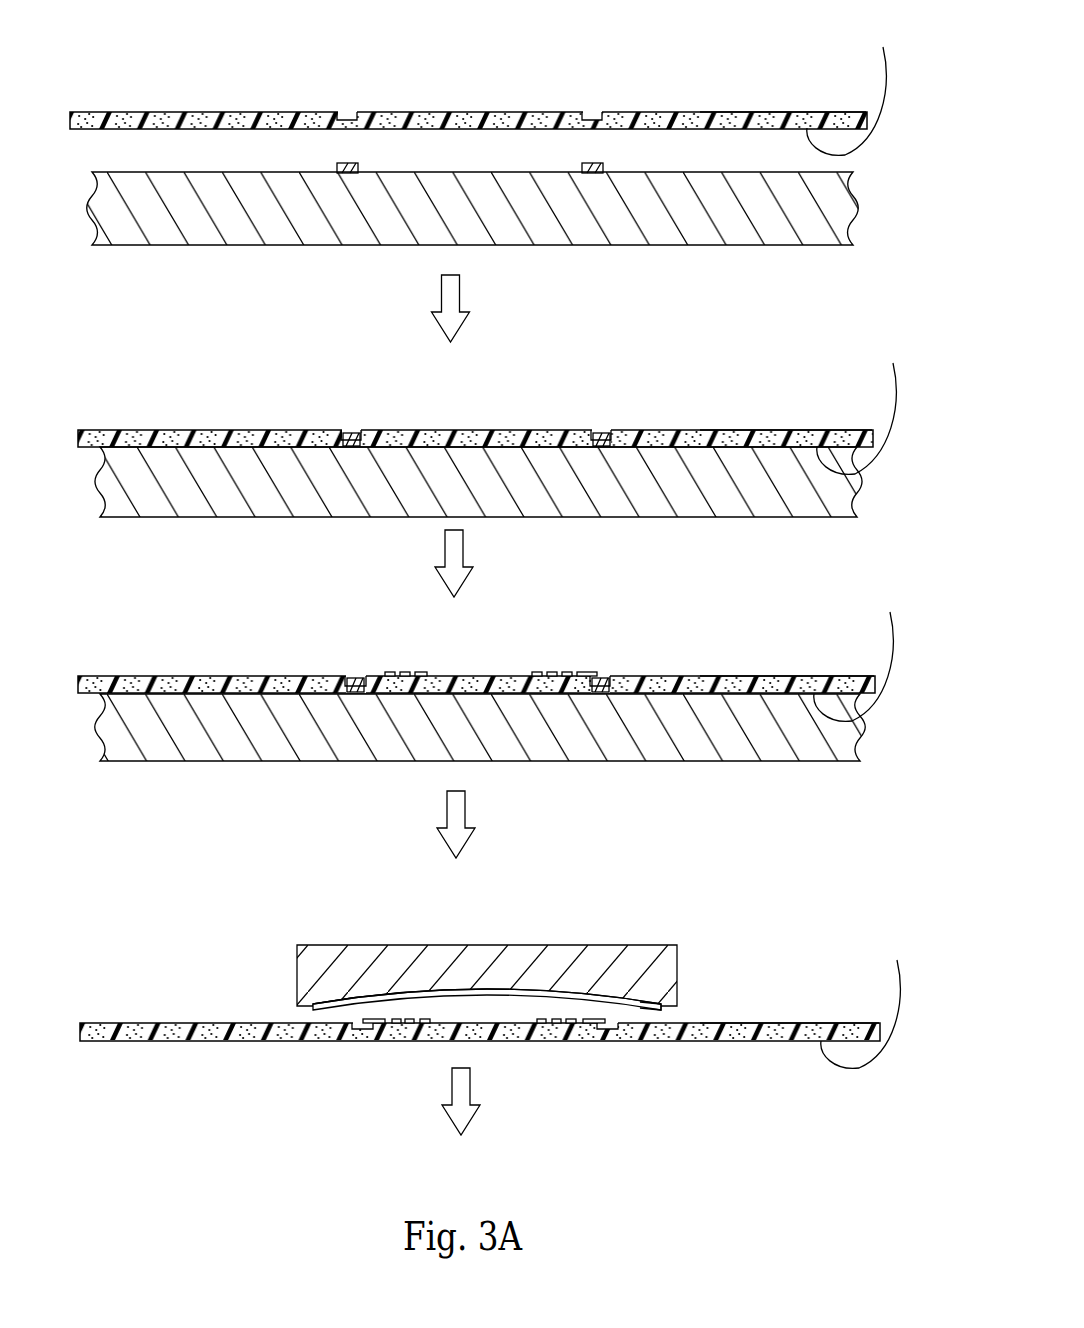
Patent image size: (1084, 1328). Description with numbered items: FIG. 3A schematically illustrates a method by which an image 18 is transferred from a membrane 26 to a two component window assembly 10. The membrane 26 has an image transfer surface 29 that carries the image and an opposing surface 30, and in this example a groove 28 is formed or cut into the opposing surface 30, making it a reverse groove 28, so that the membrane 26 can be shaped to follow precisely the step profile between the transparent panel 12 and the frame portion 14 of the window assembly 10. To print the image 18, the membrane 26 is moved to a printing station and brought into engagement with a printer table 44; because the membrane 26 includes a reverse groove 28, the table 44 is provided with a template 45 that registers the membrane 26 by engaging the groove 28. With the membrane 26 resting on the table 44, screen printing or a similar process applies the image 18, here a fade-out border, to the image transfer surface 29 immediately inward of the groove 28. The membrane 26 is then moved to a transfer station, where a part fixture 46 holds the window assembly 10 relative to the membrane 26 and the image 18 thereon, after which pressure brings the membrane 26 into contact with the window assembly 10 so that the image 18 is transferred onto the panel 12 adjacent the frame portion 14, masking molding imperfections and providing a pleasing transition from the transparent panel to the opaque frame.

The window assembly 10 is at (340, 1013).
The transparent panel 12 is at (525, 988).
The frame portion 14 is at (657, 1005).
The image 18 is at (483, 814).
The membrane 26 is at (475, 537).
The groove 28 is at (477, 569).
The image transfer surface 29 is at (789, 520).
The opposing surface 30 is at (856, 542).
The printer table 44 is at (171, 223).
The template 45 is at (464, 354).
The part fixture 46 is at (353, 987).